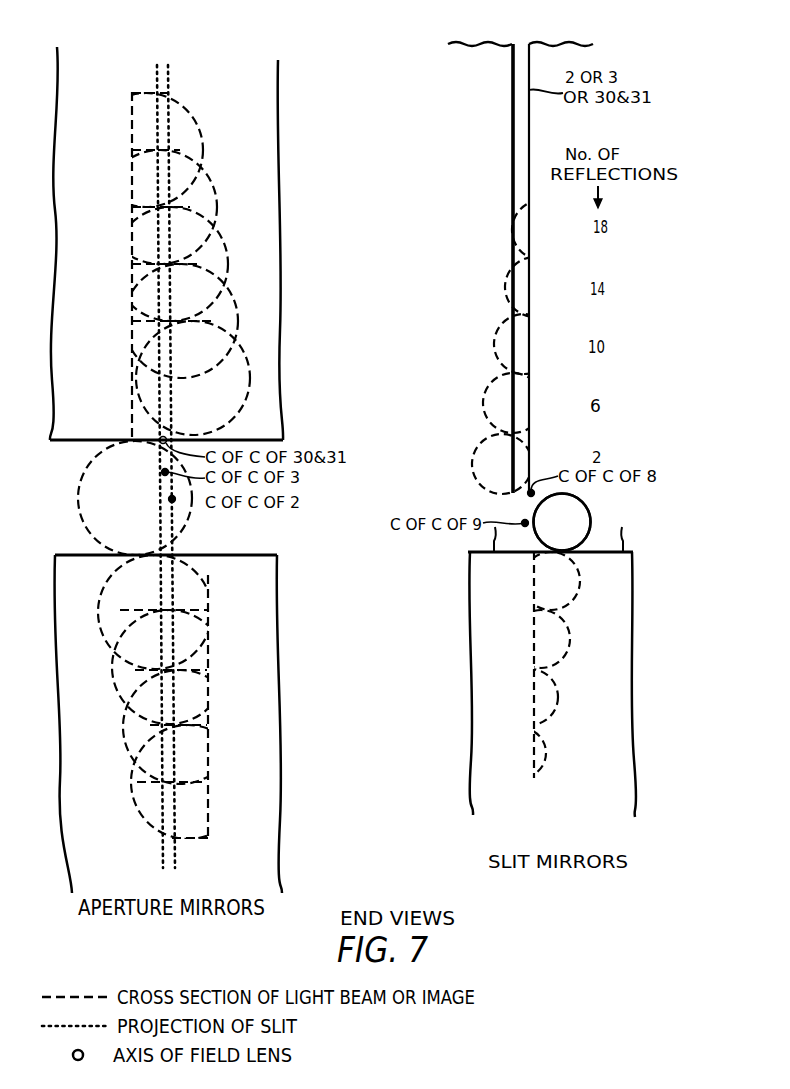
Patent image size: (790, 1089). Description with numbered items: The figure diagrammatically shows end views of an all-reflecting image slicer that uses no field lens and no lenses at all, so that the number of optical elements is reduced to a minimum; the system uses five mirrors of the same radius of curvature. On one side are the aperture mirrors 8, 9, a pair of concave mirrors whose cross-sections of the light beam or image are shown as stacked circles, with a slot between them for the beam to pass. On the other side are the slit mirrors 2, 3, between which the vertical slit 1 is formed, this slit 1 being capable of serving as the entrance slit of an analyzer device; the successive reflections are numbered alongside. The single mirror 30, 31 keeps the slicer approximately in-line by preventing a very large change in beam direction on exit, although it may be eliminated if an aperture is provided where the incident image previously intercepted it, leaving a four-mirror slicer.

The slit 1 is at (520, 55).
The slit mirror 2 is at (512, 92).
The slit mirror 3 is at (633, 592).
The aperture mirror 8 is at (283, 205).
The aperture mirror 9 is at (281, 678).
The single mirror 30 is at (557, 517).
The single mirror 31 is at (562, 522).